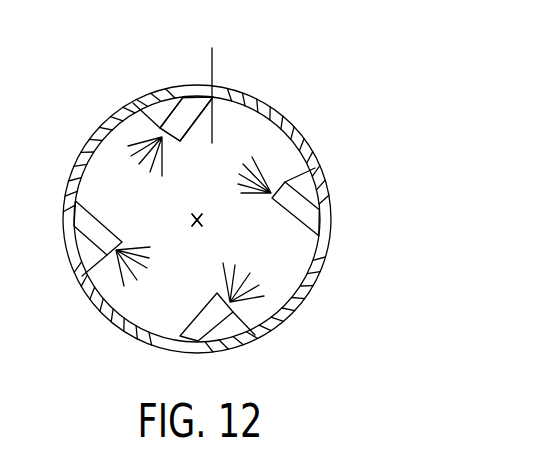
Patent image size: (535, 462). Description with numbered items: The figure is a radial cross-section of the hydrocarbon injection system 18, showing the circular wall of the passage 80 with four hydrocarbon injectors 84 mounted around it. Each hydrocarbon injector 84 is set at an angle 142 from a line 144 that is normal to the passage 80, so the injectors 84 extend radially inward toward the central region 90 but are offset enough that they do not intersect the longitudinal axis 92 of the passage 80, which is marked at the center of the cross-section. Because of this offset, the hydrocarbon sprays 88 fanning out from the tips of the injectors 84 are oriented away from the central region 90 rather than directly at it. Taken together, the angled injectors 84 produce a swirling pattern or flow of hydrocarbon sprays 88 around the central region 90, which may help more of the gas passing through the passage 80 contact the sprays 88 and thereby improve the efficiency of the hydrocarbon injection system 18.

The hydrocarbon injection system 18 is at (280, 52).
The passage 80 is at (295, 125).
The hydrocarbon injectors 84 is at (133, 103).
The hydrocarbon sprays 88 is at (128, 163).
The central region 90 is at (209, 201).
The longitudinal axis 92 is at (200, 234).
The angle 142 is at (198, 135).
The line normal to the passage 144 is at (212, 62).